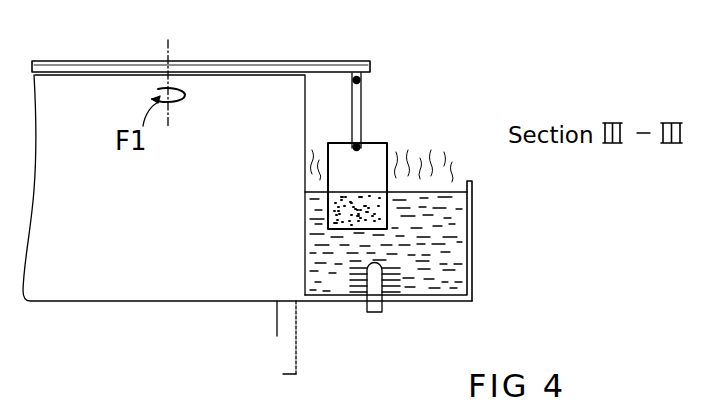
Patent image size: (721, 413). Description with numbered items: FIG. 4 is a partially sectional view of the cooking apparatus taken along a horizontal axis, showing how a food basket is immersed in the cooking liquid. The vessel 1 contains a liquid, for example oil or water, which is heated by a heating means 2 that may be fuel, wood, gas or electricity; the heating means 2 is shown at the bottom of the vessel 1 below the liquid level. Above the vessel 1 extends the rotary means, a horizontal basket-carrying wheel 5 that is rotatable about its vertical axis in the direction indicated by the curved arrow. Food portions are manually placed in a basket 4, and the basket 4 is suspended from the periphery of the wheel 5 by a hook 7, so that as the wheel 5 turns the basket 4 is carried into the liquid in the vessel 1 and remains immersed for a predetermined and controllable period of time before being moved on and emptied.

The vessel 1 is at (447, 257).
The heating means 2 is at (392, 287).
The basket 4 is at (388, 152).
The basket-carrying wheel 5 is at (237, 61).
The hook 7 is at (362, 80).